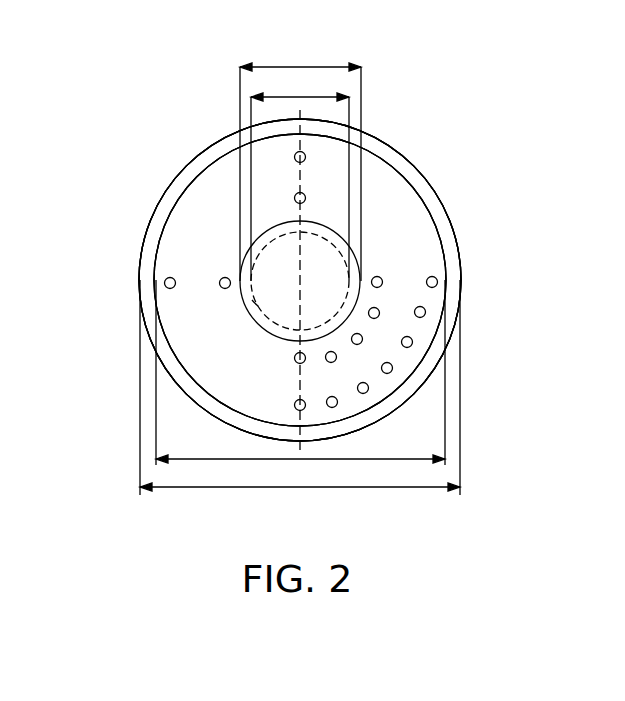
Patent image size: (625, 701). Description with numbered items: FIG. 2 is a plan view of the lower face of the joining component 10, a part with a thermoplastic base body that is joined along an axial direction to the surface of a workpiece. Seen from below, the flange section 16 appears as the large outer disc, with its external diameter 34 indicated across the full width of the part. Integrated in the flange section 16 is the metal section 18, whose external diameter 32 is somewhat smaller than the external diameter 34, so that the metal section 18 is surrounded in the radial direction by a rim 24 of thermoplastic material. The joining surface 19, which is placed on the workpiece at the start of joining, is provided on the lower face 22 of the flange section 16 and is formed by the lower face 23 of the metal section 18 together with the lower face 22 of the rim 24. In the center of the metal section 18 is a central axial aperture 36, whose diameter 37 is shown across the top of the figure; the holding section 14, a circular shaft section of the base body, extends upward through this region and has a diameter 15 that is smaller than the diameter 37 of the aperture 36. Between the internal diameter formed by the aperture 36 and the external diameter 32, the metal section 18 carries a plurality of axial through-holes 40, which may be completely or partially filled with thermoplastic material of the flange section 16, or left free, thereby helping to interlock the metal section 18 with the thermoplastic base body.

The joining component 10 is at (467, 186).
The holding section 14 is at (251, 236).
The diameter 15 is at (283, 97).
The flange section 16 is at (323, 271).
The metal section 18 is at (168, 262).
The joining surface 19 is at (75, 123).
The lower face 22 is at (167, 198).
The lower face of the metal section 23 is at (200, 202).
The rim 24 is at (162, 220).
The external diameter 32 is at (407, 459).
The external diameter 34 is at (266, 487).
The central axial aperture 36 is at (258, 304).
The diameter 37 is at (317, 67).
The axial through-holes 40 is at (383, 282).